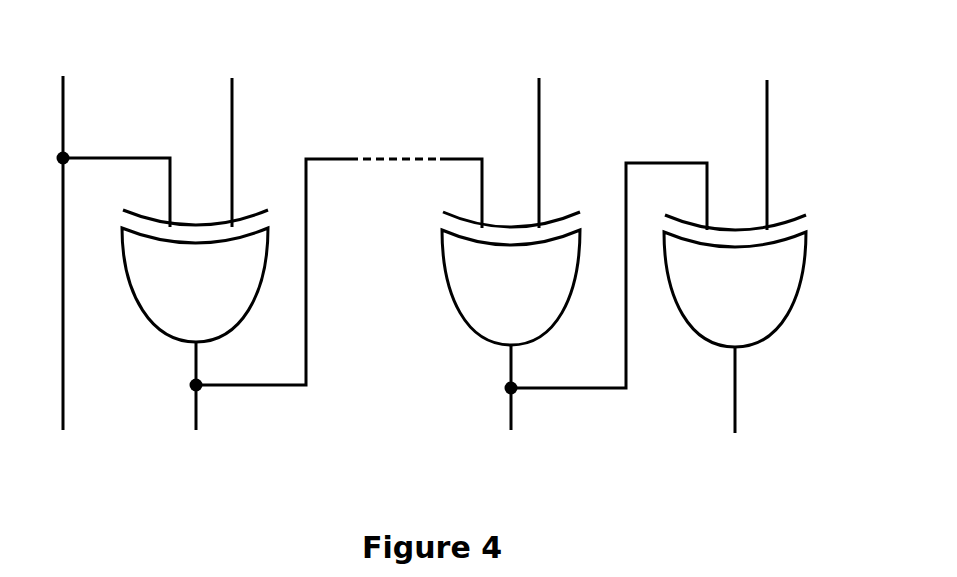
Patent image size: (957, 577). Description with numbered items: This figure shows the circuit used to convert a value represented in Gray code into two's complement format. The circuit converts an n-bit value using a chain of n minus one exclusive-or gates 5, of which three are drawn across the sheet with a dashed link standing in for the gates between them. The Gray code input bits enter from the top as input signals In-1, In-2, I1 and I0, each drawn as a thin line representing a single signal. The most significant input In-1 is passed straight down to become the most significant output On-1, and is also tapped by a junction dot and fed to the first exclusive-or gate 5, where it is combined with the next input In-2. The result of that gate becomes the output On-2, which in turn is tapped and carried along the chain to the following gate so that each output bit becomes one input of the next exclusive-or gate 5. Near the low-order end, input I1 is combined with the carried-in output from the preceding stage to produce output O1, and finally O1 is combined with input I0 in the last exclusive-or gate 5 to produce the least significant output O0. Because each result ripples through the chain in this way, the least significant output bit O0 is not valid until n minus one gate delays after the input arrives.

The exclusive-or gate 5 is at (820, 253).
The input signal n-1 In-1 is at (112, 236).
The input signal n-2 In-2 is at (246, 134).
The input signal 1 I1 is at (544, 136).
The input signal 0 I0 is at (774, 138).
The output signal n-1 On-1 is at (69, 459).
The output signal n-2 On-2 is at (329, 319).
The output signal 1 O1 is at (599, 322).
The least significant output bit O0 is at (735, 415).